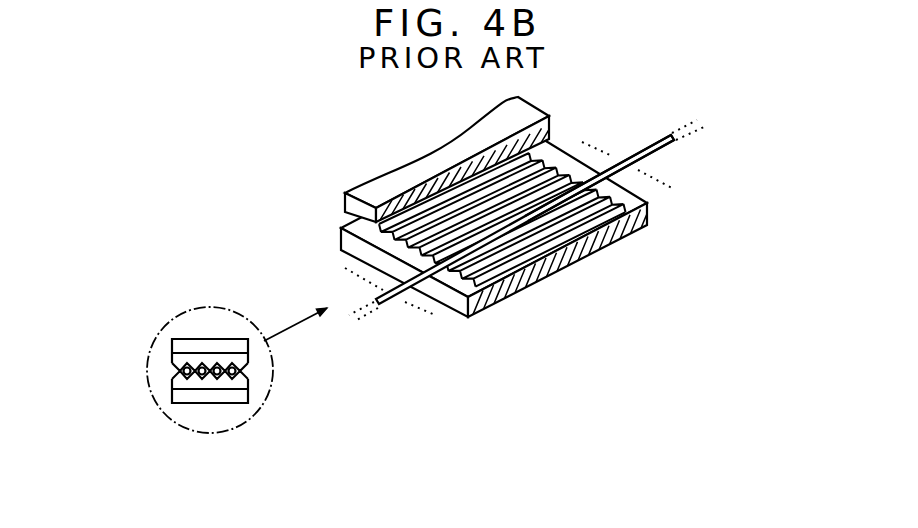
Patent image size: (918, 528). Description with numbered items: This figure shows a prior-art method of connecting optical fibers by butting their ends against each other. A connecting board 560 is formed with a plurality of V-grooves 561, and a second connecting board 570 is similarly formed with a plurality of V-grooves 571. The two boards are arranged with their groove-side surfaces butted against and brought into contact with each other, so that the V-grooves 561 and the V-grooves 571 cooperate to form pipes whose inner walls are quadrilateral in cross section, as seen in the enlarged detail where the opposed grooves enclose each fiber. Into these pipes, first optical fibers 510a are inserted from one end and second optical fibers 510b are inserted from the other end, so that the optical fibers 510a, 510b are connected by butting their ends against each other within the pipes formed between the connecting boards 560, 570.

The connecting board 570 is at (413, 163).
The V-grooves 571 is at (191, 354).
The connecting board 560 is at (576, 261).
The V-grooves 561 is at (510, 258).
The first optical fibers 510a is at (398, 296).
The second optical fibers 510b is at (668, 153).